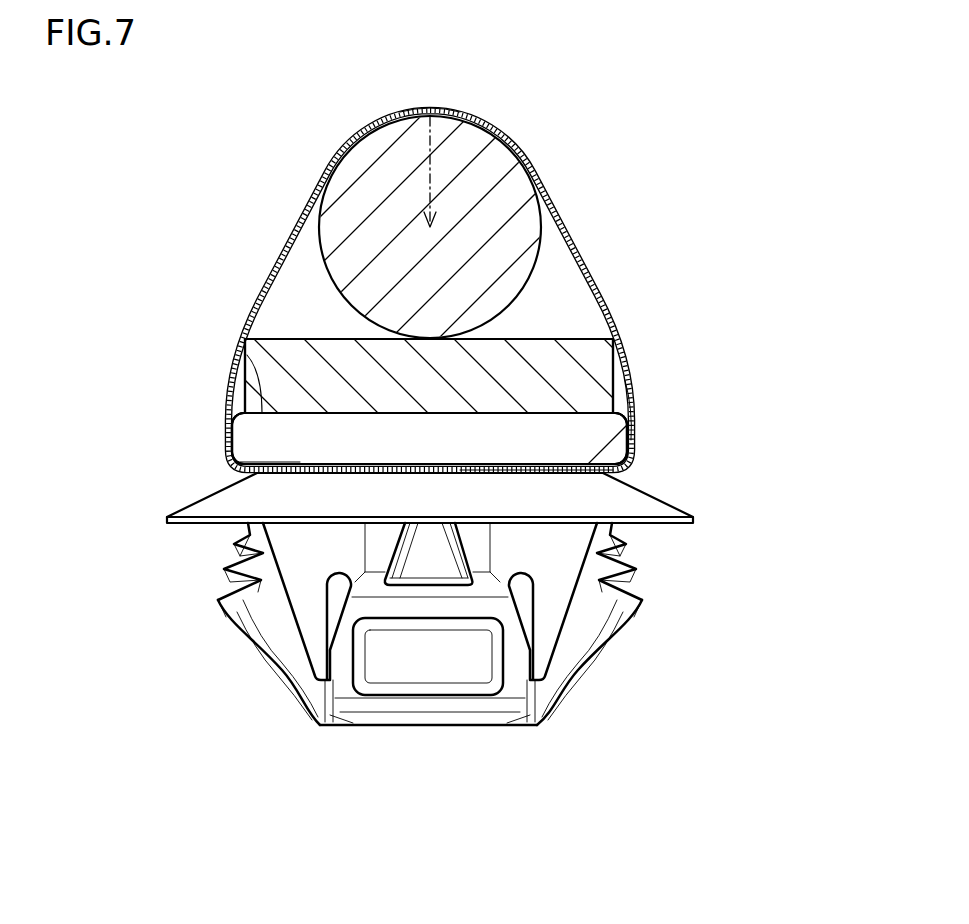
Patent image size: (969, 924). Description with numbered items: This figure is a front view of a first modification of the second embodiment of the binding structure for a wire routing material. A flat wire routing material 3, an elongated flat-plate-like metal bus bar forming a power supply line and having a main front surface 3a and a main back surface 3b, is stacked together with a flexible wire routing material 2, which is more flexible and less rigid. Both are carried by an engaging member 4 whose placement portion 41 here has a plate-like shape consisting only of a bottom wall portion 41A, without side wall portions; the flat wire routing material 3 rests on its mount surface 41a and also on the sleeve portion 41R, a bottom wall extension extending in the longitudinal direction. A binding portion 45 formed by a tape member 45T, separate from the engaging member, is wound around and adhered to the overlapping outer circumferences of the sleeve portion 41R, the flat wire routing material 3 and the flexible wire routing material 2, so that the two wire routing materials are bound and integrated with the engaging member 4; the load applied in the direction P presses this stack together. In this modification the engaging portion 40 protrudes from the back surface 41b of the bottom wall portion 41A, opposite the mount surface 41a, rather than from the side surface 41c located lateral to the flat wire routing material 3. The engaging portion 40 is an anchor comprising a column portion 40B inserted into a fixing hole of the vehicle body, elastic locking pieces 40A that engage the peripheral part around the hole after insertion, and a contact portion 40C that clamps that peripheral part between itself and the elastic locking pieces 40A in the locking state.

The flexible wire routing material 2 is at (358, 175).
The pressing load direction P is at (428, 148).
The flat wire routing material 3 is at (540, 347).
The main front surface 3a is at (307, 339).
The main back surface 3b is at (227, 454).
The engaging member 4 is at (567, 733).
The engaging portion 40 is at (322, 726).
The elastic locking piece 40A is at (232, 604).
The column portion 40B is at (440, 607).
The contact portion 40C is at (225, 496).
The placement portion 41 is at (557, 424).
The sleeve portion 41R is at (229, 431).
The bottom wall portion 41A is at (429, 438).
The mount surface 41a is at (286, 413).
The back surface 41b is at (545, 475).
The side surface 41c is at (636, 432).
The binding portion 45 is at (653, 450).
The tape member 45T is at (447, 108).